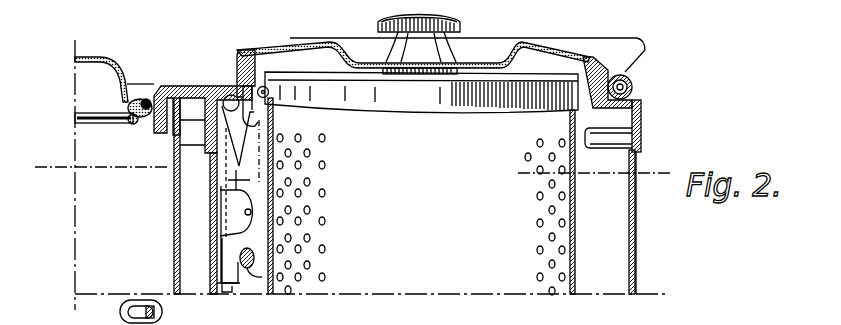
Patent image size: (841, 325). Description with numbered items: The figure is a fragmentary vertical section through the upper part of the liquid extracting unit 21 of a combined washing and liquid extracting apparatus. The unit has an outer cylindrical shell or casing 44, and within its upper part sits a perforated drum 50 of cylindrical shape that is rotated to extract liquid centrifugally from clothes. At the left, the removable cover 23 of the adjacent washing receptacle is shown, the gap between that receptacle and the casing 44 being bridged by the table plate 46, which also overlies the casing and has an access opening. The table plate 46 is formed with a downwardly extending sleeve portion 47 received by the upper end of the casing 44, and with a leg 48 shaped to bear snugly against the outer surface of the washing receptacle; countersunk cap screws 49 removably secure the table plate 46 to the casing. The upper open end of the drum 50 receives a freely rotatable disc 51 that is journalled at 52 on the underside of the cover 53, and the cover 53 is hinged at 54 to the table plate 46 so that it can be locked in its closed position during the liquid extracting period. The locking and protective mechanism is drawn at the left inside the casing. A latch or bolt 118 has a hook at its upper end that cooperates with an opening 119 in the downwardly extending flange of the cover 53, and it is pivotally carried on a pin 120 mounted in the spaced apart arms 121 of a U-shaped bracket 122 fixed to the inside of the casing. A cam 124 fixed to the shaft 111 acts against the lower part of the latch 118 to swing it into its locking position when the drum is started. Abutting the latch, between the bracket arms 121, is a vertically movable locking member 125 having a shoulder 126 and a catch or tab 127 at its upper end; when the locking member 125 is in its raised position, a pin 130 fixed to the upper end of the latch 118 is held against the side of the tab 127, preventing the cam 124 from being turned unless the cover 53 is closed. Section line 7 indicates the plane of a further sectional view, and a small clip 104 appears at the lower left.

The section line 7- 7 is at (45, 186).
The liquid extracting unit 21 is at (171, 251).
The removable cover 23 is at (122, 61).
The outer shell or casing 44 is at (213, 259).
The table plate 46 is at (229, 94).
The sleeve portion 47 is at (208, 122).
The leg 48 is at (176, 169).
The countersunk cap screws 49 is at (641, 137).
The perforated drum 50 is at (575, 233).
The freely rotatable disc 51 is at (513, 110).
The journal 52 is at (413, 70).
The cover 53 is at (542, 47).
The hinge 54 is at (633, 80).
The clip 104 is at (121, 311).
The shaft 111 is at (254, 263).
The latch or bolt 118 is at (252, 180).
The opening 119 is at (265, 86).
The pin 120 is at (252, 212).
The arms 121 is at (232, 205).
The U-shaped bracket 122 is at (221, 229).
The cam 124 is at (262, 277).
The locking member 125 is at (227, 285).
The shoulder 126 is at (244, 118).
The catch or tab 127 is at (238, 52).
The pin 130 is at (232, 112).